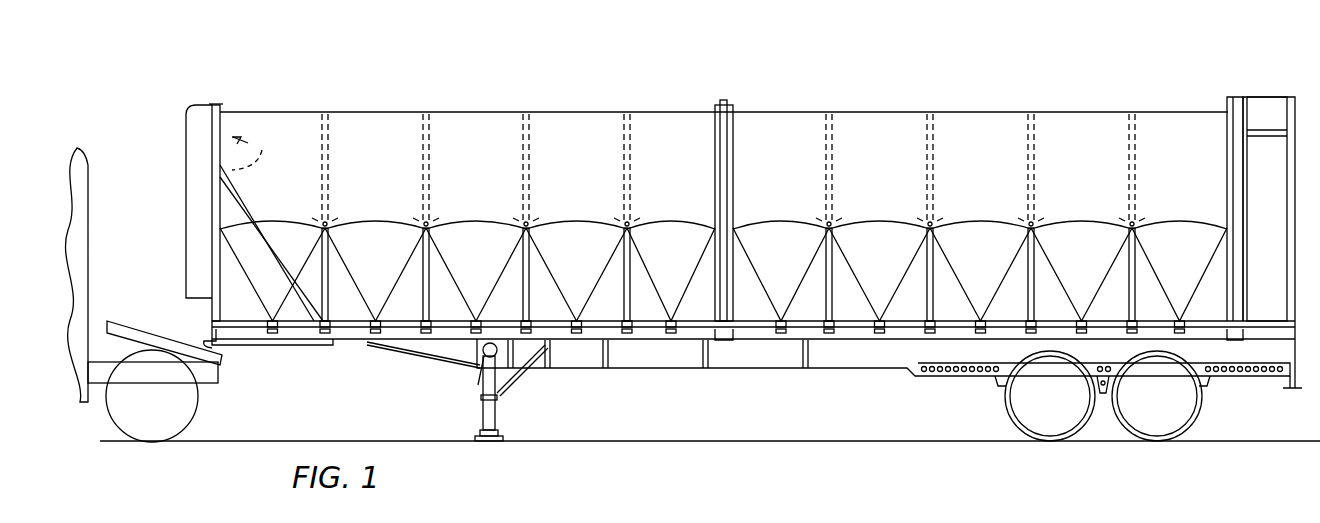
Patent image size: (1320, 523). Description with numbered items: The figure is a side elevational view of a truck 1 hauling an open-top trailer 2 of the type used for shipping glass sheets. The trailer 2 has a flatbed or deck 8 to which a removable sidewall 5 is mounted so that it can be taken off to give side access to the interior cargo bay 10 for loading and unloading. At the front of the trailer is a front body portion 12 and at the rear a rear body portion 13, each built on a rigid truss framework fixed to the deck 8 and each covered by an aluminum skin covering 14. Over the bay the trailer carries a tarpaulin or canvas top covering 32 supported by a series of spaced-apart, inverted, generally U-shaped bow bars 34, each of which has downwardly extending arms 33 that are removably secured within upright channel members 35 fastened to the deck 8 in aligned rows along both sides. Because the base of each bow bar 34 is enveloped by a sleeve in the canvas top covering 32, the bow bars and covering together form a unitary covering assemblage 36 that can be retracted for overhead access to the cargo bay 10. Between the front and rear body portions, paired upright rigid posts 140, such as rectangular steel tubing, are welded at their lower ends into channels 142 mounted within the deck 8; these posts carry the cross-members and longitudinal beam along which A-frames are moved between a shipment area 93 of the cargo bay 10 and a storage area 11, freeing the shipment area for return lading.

The truck 1 is at (88, 165).
The open-top trailer 2 is at (194, 103).
The sidewall 5 is at (568, 289).
The deck 8 is at (383, 313).
The cargo bay 10 is at (965, 182).
The storage area 11 is at (222, 178).
The front body portion 12 is at (205, 104).
The rear body portion 13 is at (1271, 104).
The aluminum skin covering 14 is at (193, 222).
The canvas top covering 32 is at (566, 188).
The arms 33 is at (410, 256).
The bow bars 34 is at (326, 150).
The upright channel members 35 is at (328, 334).
The unitary covering assemblage 36 is at (632, 152).
The shipment area 93 is at (474, 218).
The upright posts 140 is at (220, 104).
The channels 142 is at (212, 337).